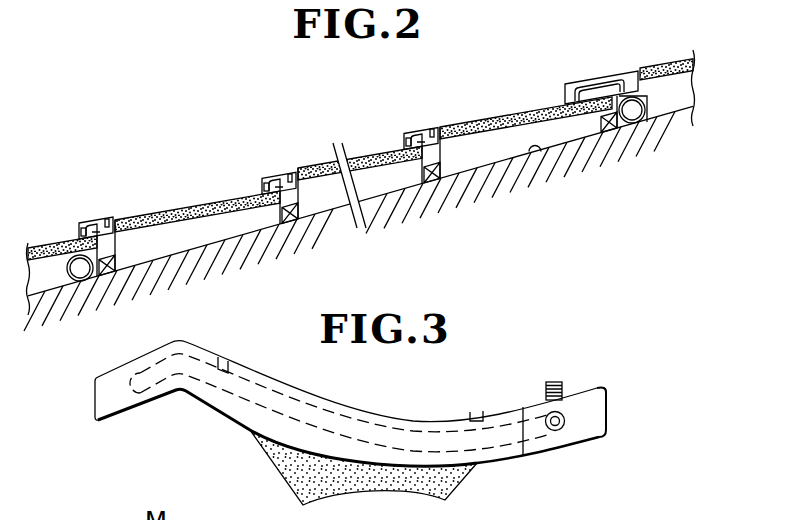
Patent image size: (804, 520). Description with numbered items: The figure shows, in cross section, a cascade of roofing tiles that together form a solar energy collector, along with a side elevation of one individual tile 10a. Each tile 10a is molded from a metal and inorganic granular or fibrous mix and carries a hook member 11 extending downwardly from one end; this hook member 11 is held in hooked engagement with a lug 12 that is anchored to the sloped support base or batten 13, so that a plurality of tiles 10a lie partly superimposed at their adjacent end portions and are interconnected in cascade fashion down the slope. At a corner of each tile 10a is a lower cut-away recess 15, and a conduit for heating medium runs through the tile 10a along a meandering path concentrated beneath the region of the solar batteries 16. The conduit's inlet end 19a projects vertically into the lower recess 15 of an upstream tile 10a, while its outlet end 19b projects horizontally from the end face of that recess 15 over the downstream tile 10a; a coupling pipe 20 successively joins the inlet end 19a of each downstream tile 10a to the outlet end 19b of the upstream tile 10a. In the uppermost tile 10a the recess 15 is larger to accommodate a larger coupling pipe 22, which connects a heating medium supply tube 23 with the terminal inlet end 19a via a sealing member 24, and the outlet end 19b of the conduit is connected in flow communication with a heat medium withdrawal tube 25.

In FIG. 2, the tile 10a is at (194, 198).
In FIG. 3, the tile 10a is at (483, 408).
In FIG. 2, the hook member 11 is at (124, 270).
In FIG. 3, the hook member 11 is at (455, 489).
In FIG. 2, the lug 12 is at (108, 277).
In FIG. 2, the support base or batten 13 is at (538, 158).
In FIG. 2, the lower cut-away recess 15 is at (572, 88).
In FIG. 3, the lower cut-away recess 15 is at (594, 432).
In FIG. 3, the solar batteries 16 is at (270, 393).
In FIG. 2, the inlet end 19a is at (403, 146).
In FIG. 3, the inlet end 19a is at (553, 381).
In FIG. 2, the outlet end 19b is at (432, 129).
In FIG. 3, the outlet end 19b is at (555, 431).
In FIG. 2, the coupling pipe 20 is at (86, 238).
In FIG. 2, the larger coupling pipe 22 is at (602, 82).
In FIG. 2, the heating medium supply tube 23 is at (631, 124).
In FIG. 2, the sealing member 24 is at (648, 123).
In FIG. 2, the heat medium withdrawal tube 25 is at (80, 282).